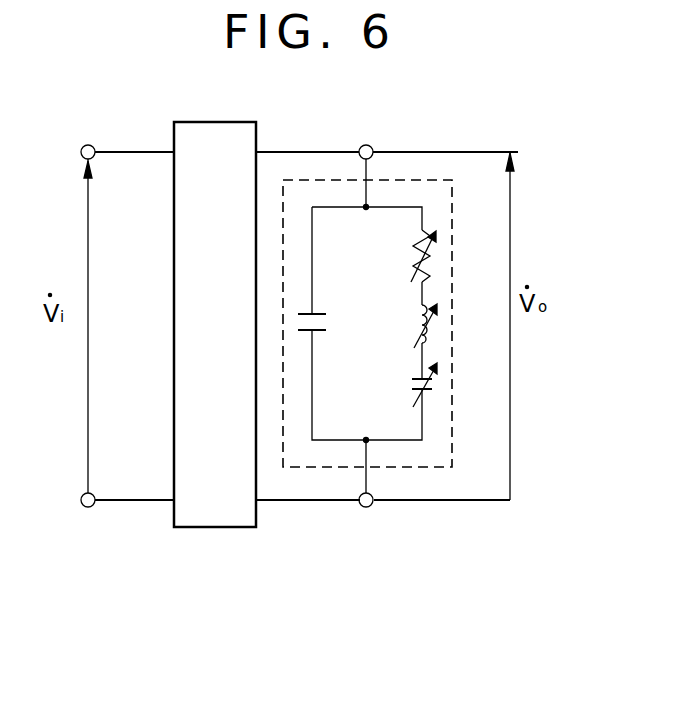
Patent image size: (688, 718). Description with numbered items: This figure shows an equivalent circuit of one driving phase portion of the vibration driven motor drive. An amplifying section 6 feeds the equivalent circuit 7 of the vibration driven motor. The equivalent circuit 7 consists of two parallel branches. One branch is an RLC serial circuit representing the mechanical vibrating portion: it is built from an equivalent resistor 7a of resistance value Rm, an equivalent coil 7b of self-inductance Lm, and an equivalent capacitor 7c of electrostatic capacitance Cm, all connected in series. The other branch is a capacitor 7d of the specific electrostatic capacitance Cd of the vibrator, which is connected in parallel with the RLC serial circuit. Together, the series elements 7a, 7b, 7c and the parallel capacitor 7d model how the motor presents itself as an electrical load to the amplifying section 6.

The amplifying section 6 is at (243, 143).
The equivalent circuit of the vibration driven motor 7 is at (405, 177).
The equivalent resistor 7a is at (433, 258).
The equivalent coil 7b is at (438, 334).
The equivalent capacitor 7c is at (438, 388).
The capacitor 7d is at (328, 325).